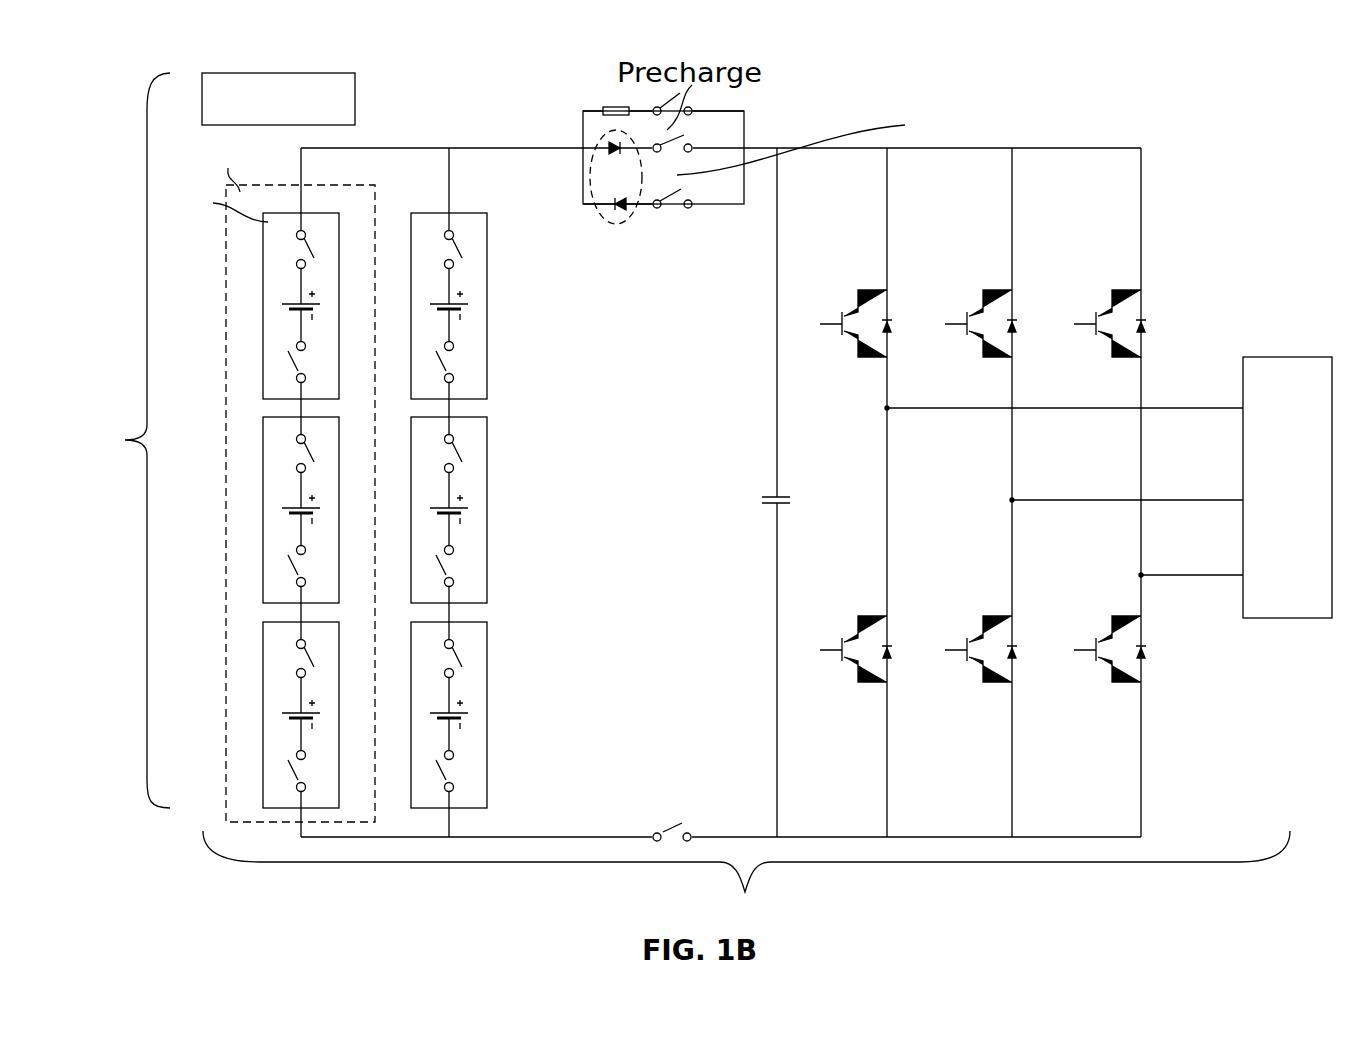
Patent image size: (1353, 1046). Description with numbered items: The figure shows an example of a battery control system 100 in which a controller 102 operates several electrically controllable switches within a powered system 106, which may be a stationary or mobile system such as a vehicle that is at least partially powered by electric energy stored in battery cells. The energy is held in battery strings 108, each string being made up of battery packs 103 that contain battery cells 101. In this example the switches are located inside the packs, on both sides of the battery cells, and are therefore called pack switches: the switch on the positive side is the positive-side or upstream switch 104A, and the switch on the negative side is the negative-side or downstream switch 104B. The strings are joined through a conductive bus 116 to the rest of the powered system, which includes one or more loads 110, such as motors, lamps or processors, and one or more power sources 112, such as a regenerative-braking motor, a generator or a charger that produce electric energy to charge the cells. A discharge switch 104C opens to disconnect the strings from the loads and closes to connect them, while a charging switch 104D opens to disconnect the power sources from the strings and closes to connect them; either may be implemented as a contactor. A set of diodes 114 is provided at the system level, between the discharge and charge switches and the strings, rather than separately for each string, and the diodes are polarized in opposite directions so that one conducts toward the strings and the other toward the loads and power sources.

The battery control system 100 is at (121, 440).
The battery cell 101 is at (474, 513).
The controller 102 is at (280, 73).
The battery pack 103 is at (488, 738).
The positive-side switch 104A is at (286, 252).
The negative-side switch 104B is at (281, 347).
The discharge switch 104C is at (645, 221).
The charging switch 104D is at (695, 137).
The powered system 106 is at (746, 880).
The battery string 108 is at (375, 220).
The load 110 is at (1287, 487).
The power source 112 is at (1306, 523).
The set of diodes 114 is at (603, 208).
The conductive bus 116 is at (477, 148).